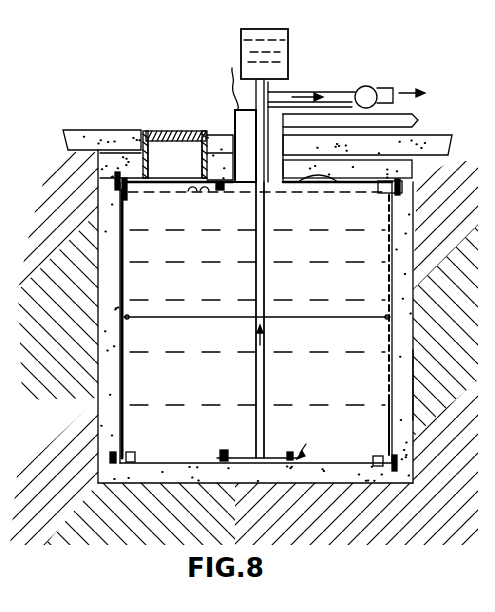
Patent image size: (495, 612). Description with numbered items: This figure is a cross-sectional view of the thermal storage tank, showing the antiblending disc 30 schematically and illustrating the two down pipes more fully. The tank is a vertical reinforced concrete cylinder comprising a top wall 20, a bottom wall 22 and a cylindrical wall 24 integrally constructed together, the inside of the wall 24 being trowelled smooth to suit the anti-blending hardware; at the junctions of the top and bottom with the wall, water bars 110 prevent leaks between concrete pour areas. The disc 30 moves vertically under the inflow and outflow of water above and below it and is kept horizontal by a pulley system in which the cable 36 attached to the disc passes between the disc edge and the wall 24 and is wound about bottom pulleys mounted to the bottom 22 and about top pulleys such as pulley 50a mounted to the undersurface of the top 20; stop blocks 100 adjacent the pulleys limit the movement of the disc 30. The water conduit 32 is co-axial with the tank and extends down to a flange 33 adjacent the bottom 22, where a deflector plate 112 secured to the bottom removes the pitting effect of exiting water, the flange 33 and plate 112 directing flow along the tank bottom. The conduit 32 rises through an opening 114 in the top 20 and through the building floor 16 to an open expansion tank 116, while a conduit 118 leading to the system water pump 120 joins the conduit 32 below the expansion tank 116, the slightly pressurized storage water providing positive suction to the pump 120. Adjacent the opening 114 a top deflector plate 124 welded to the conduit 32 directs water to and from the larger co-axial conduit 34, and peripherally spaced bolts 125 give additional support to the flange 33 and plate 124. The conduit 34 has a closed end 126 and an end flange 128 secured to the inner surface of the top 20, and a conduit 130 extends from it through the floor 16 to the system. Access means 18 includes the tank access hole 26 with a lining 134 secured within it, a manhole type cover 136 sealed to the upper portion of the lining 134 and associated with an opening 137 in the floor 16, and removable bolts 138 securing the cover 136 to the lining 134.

The building floor 16 is at (115, 129).
The floor access means 18 is at (167, 82).
The manhole type cover 136 is at (172, 130).
The opening in floor 137 is at (156, 118).
The removable bolts 138 is at (203, 131).
The water conduit 32 is at (244, 78).
The closed end 126 is at (238, 95).
The co-axial conduit 34 is at (236, 112).
The open expansion tank 116 is at (288, 36).
The conduit 118 is at (323, 91).
The top wall 20 is at (333, 182).
The system water pump 120 is at (378, 87).
The conduit 130 is at (436, 118).
The water bars 110 is at (417, 187).
The tank access hole 26 is at (146, 187).
The lining 134 is at (184, 188).
The peripherally spaced bolts 125 is at (226, 195).
The top deflector plate 124 is at (268, 192).
The end flange 128 is at (318, 196).
The opening in tank top 114 is at (255, 244).
The top pulley 50a is at (390, 190).
The antiblending disc 30 is at (362, 318).
The cylindrical wall 24 is at (413, 337).
The cable 36 is at (412, 387).
The stop blocks 100 is at (380, 440).
The flange 33 is at (290, 457).
The deflector plate 112 is at (236, 485).
The bottom wall 22 is at (327, 484).